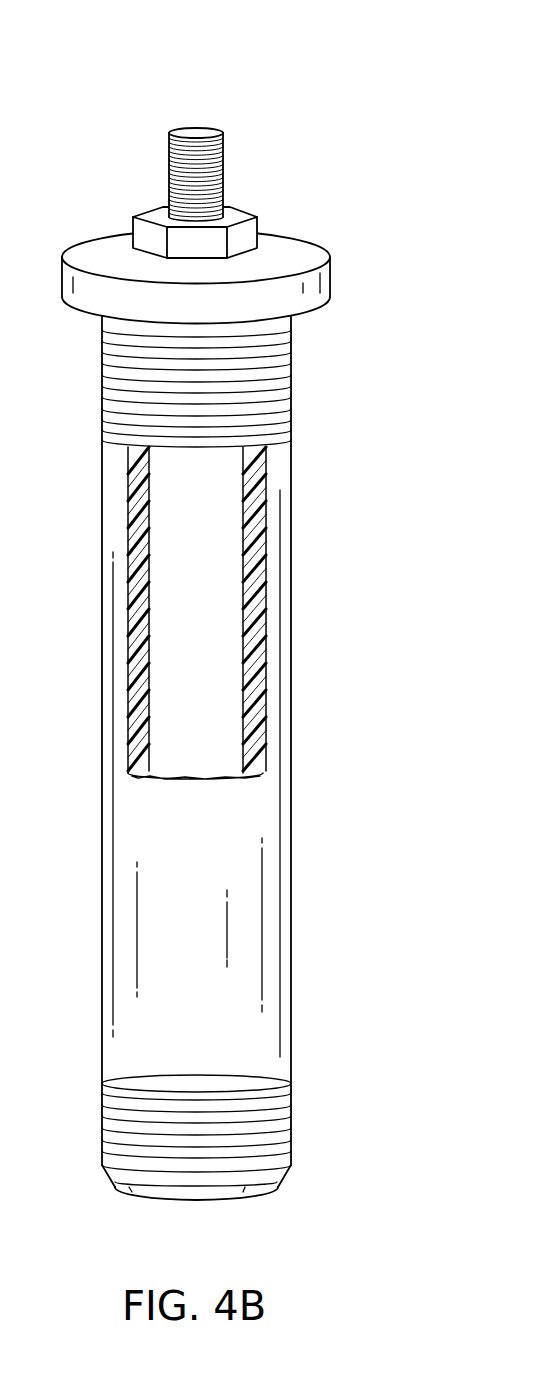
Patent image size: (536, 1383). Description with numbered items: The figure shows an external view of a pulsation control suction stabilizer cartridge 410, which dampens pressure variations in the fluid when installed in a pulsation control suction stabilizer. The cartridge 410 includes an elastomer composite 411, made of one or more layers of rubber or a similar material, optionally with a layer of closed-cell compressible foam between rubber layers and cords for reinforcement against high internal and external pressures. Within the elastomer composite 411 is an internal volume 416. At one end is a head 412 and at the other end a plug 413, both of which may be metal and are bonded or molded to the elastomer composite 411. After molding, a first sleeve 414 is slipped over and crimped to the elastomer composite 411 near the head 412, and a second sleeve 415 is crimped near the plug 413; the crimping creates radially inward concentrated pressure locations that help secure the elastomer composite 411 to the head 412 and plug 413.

The pulsation control suction stabilizer cartridge 410 is at (102, 77).
The elastomer composite 411 is at (291, 890).
The head 412 is at (333, 273).
The plug 413 is at (255, 1198).
The first sleeve 414 is at (291, 363).
The second sleeve 415 is at (291, 1117).
The internal volume 416 is at (217, 643).